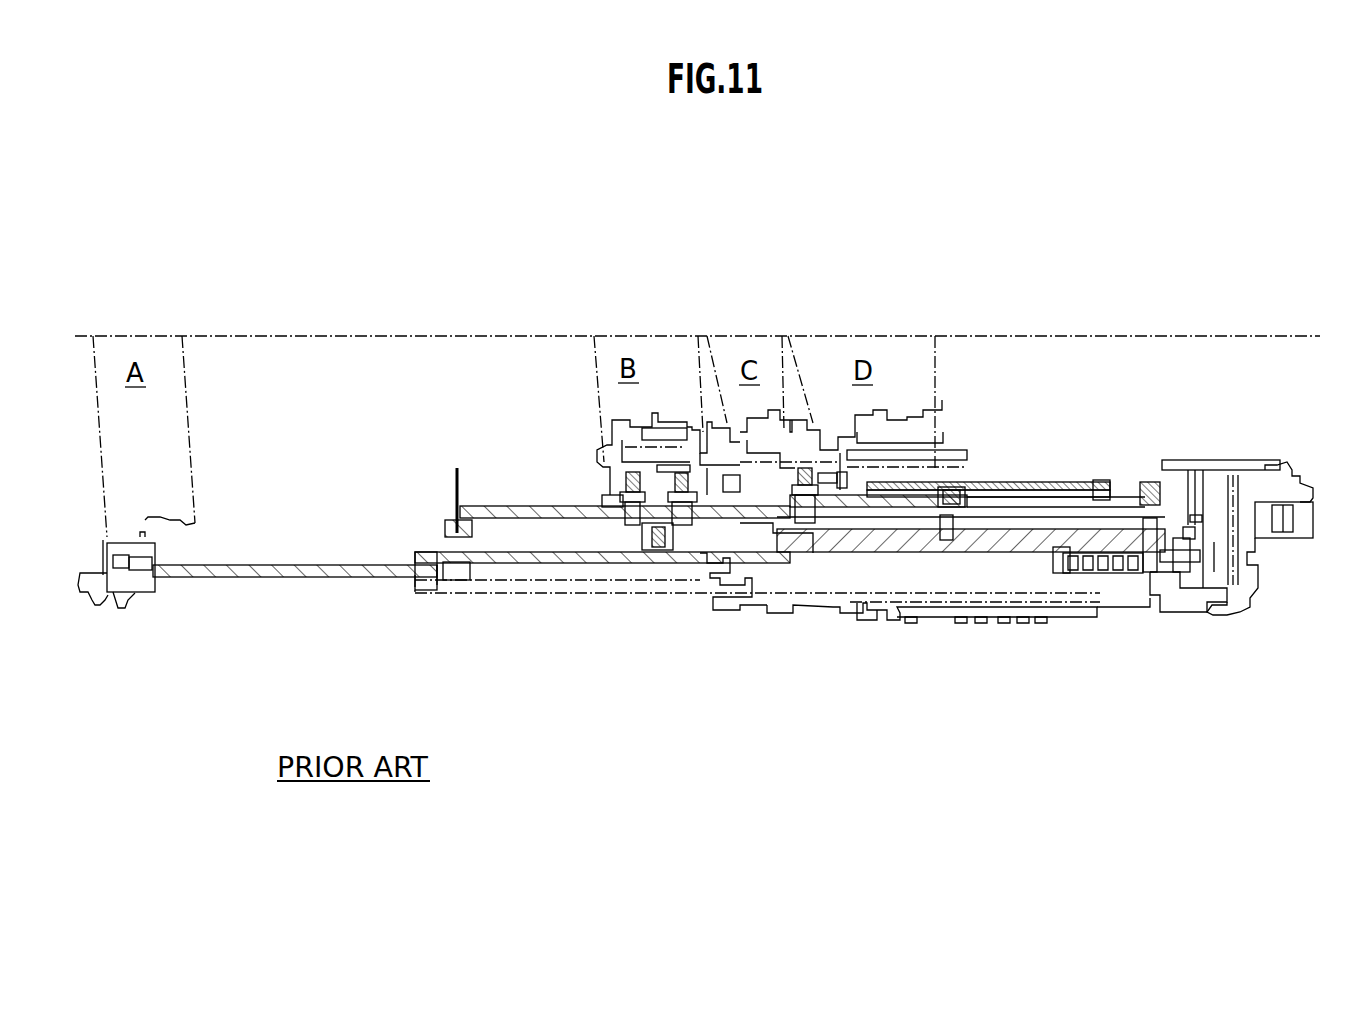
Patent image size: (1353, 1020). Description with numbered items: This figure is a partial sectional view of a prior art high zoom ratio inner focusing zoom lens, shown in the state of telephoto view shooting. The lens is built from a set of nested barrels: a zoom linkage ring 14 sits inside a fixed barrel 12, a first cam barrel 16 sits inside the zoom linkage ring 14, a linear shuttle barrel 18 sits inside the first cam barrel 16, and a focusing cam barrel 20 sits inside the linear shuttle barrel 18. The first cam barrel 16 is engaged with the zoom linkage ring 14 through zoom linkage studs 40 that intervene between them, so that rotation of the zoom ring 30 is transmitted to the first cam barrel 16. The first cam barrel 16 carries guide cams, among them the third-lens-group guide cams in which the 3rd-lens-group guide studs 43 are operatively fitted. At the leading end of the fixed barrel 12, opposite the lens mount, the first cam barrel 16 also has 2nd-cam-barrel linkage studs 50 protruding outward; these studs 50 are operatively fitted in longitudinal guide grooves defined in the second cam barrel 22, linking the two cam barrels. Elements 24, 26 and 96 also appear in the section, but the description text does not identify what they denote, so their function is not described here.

The fixed barrel 12 is at (997, 553).
The zoom linkage ring 14 is at (1094, 553).
The first cam barrel 16 is at (876, 553).
The linear shuttle barrel 18 is at (557, 517).
The focusing cam barrel 20 is at (772, 522).
The second cam barrel 22 is at (505, 554).
The lead screw 24 is at (257, 588).
The cover 26 is at (583, 594).
The zoom ring 30 is at (1089, 635).
The zoom linkage studs 40 is at (978, 553).
The 3rd-lens-group guide studs 43 is at (815, 522).
The 2nd-cam-barrel linkage studs 50 is at (648, 545).
The bolt 96 is at (633, 505).